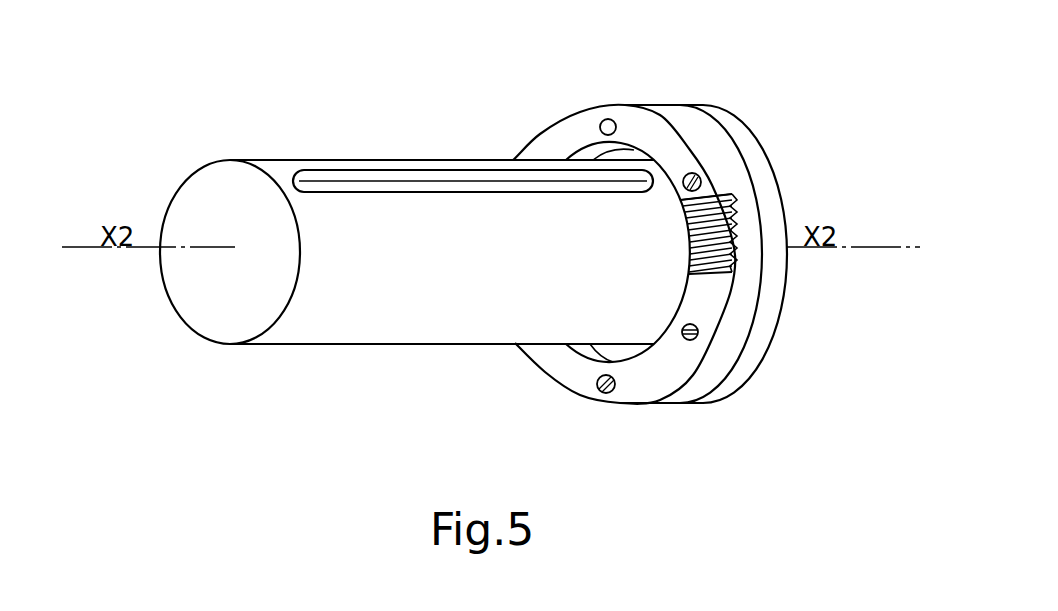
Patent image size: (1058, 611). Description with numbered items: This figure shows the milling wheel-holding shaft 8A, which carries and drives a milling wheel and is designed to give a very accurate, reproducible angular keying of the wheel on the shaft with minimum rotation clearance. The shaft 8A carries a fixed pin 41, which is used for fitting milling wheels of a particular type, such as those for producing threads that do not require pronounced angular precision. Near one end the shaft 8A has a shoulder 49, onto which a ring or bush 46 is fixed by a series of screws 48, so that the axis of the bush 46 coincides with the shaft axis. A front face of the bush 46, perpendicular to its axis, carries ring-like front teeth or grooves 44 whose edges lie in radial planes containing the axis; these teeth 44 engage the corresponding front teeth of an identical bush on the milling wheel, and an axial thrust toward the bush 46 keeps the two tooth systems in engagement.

The wheel-holding shaft 8A is at (434, 366).
The fixed pin 41 is at (415, 177).
The front teeth or grooves 44 is at (706, 288).
The bush 46 is at (662, 155).
The screws 48 is at (606, 124).
The shoulder 49 is at (758, 187).